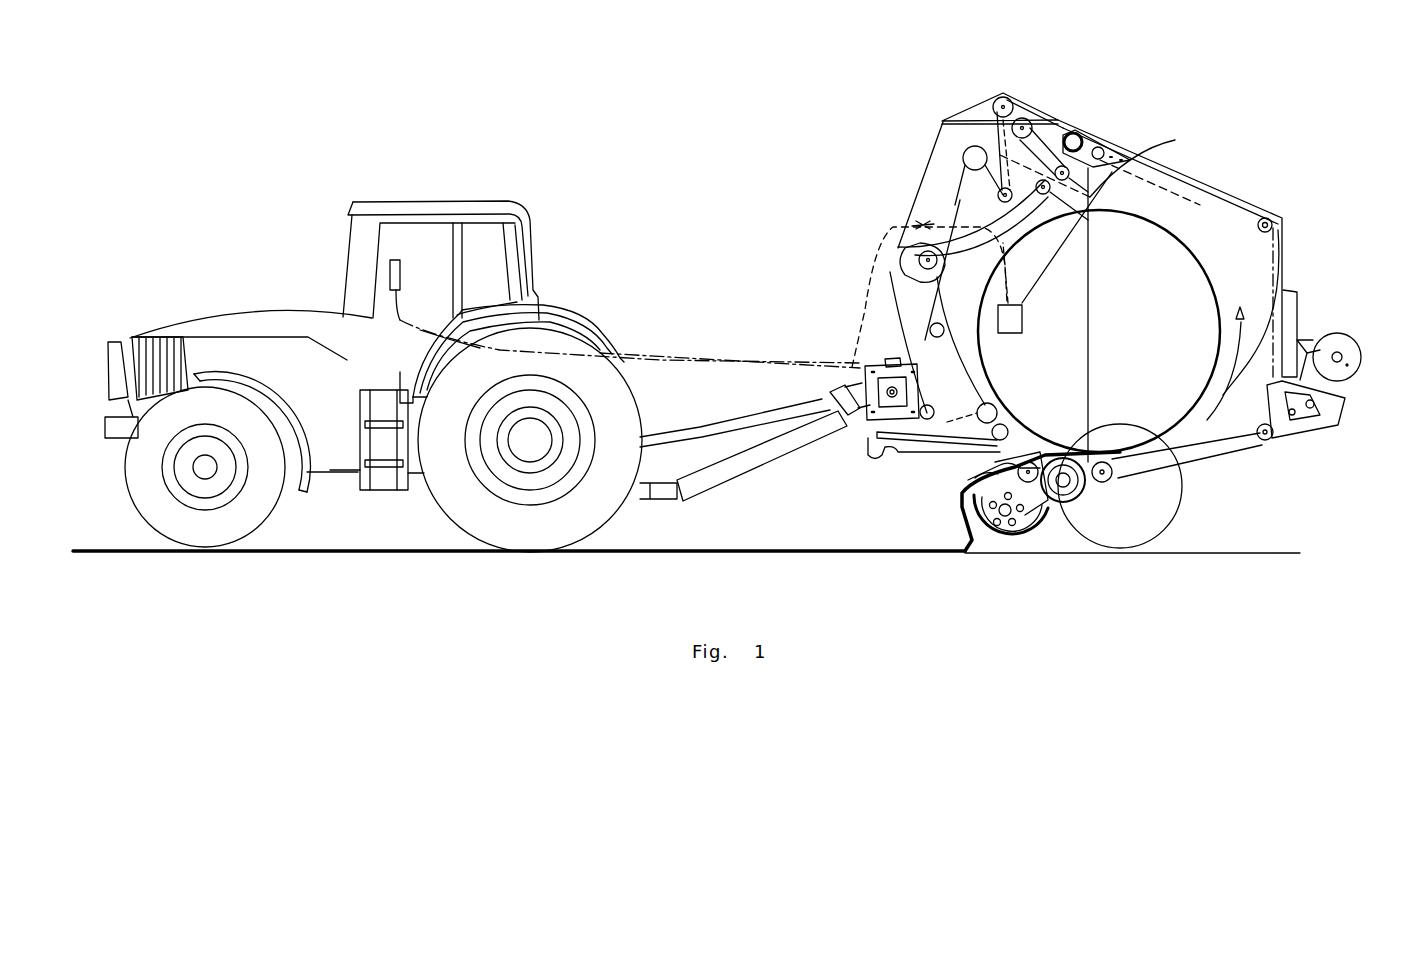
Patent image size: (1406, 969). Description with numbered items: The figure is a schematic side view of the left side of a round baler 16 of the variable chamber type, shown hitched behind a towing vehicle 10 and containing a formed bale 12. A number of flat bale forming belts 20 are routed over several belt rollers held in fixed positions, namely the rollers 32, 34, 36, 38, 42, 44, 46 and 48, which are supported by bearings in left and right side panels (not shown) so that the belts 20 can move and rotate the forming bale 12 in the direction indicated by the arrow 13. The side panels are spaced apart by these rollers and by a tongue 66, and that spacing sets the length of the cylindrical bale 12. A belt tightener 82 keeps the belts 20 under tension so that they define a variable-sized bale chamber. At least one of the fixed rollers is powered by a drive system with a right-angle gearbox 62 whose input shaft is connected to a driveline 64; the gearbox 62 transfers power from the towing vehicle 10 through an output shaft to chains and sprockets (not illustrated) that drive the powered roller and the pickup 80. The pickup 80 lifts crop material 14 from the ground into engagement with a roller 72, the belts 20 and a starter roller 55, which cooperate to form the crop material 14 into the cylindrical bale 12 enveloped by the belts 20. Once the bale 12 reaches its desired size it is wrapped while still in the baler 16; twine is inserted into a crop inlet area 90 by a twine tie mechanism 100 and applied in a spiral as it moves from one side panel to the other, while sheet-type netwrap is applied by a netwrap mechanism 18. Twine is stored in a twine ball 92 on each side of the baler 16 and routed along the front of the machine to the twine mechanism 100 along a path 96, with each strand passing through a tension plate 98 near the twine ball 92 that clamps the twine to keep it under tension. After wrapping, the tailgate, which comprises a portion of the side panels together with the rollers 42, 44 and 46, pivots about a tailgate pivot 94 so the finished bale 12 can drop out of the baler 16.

The towing vehicle 10 is at (303, 255).
The bale 12 is at (1150, 253).
The arrow 13 is at (1250, 330).
The crop material 14 is at (923, 553).
The round baler 16 is at (808, 194).
The netwrap mechanism 18 is at (1336, 312).
The bale forming belts 20 is at (1283, 240).
The belt roller 32 is at (908, 310).
The belt roller 34 is at (897, 350).
The belt roller 36 is at (964, 152).
The belt roller 38 is at (1027, 102).
The belt roller 42 is at (1268, 222).
The belt roller 44 is at (1270, 441).
The belt roller 46 is at (1108, 480).
The belt roller 48 is at (1068, 130).
The starter roller 55 is at (988, 463).
The right-angle gearbox 62 is at (868, 444).
The driveline 64 is at (760, 413).
The tongue 66 is at (880, 372).
The roller 72 is at (1073, 486).
The pickup 80 is at (969, 559).
The belt tightener 82 is at (915, 250).
The crop inlet area 90 is at (975, 488).
The twine ball 92 is at (1140, 168).
The tailgate pivot 94 is at (1105, 150).
The twine path 96 is at (897, 228).
The tension plate 98 is at (921, 224).
The twine tie mechanism 100 is at (870, 472).